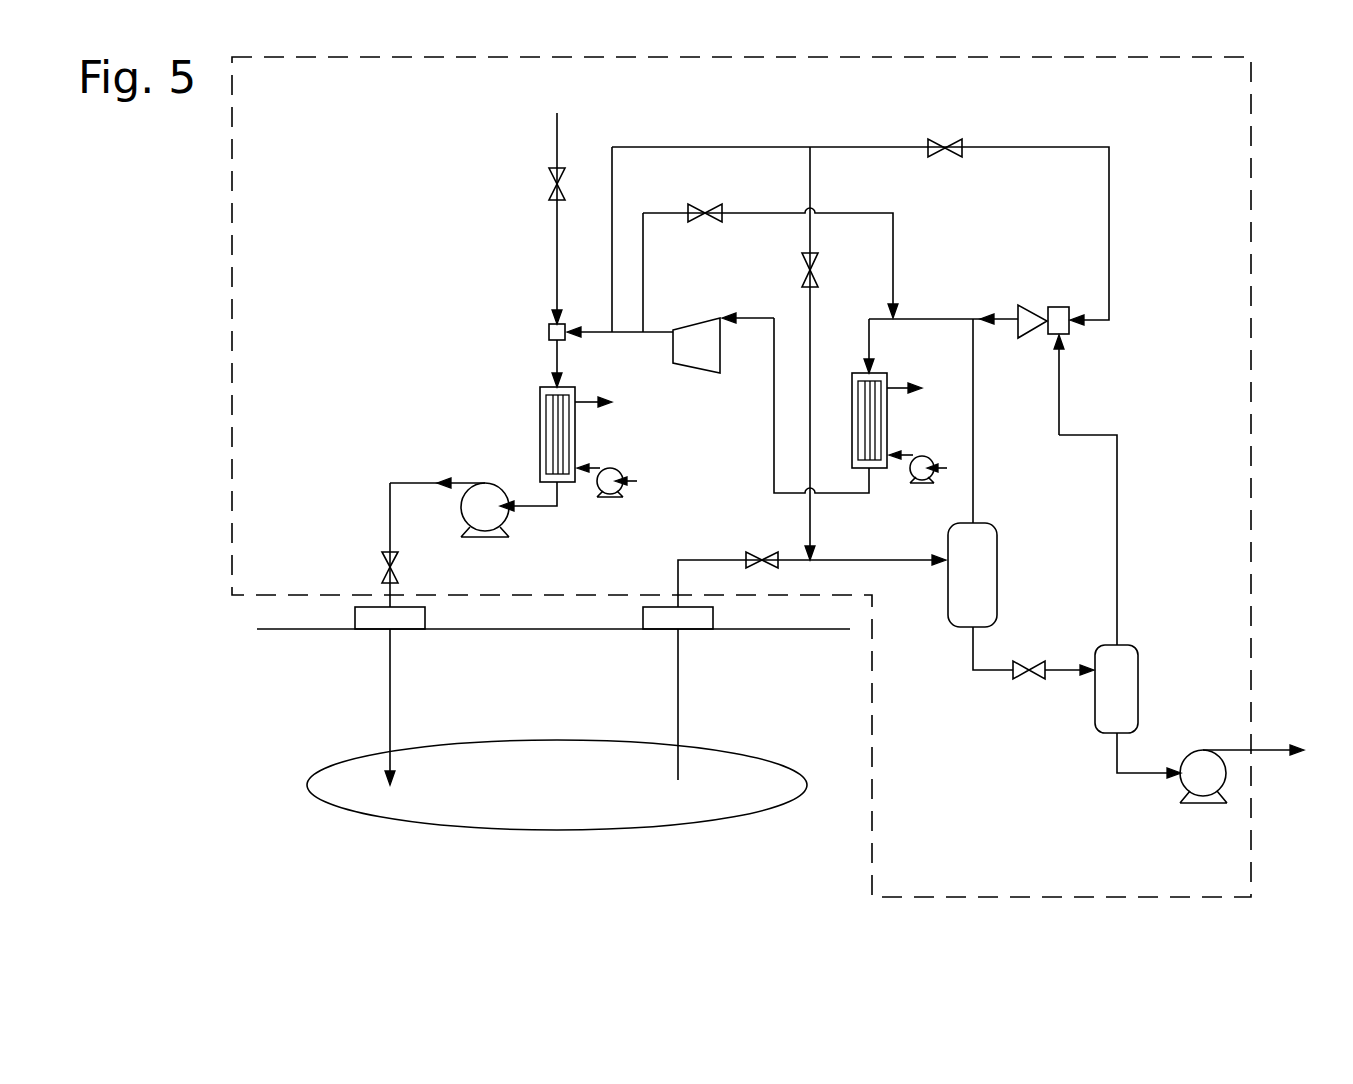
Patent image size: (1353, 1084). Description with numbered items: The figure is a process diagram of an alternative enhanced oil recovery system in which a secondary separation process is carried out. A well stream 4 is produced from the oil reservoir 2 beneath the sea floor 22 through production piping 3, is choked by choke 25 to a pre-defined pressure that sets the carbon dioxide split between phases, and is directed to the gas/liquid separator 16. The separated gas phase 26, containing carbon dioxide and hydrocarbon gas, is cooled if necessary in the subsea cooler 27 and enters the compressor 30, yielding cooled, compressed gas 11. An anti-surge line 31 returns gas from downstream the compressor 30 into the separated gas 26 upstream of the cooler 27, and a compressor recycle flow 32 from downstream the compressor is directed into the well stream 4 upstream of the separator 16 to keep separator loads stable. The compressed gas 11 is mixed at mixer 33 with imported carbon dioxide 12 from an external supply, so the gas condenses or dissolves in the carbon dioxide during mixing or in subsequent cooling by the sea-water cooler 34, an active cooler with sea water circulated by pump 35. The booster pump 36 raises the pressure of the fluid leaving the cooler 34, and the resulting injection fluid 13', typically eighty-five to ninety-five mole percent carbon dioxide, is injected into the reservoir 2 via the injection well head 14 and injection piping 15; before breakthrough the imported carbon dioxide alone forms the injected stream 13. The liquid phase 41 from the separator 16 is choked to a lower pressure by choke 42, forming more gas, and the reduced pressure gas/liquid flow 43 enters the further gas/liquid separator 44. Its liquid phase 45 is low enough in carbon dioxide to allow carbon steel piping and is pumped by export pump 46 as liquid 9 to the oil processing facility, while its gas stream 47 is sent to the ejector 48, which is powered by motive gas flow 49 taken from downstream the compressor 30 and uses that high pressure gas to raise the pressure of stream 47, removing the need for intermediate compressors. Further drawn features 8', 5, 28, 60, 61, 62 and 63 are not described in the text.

The fuel supply system 8' is at (692, 477).
The oil reservoir 2 is at (503, 829).
The production piping 3 is at (680, 696).
The well stream 4 is at (678, 571).
The deck penetration 5 is at (656, 623).
The liquid phase 9 is at (1268, 752).
The compressed gas 11 is at (597, 336).
The imported CO2 12 is at (557, 237).
The injection stream 13 is at (512, 362).
The injection fluid 13' is at (356, 545).
The injection well head 14 is at (408, 620).
The injection piping 15 is at (390, 712).
The gas/liquid separator 16 is at (990, 576).
The sea floor 22 is at (281, 632).
The choke 25 is at (762, 551).
The gas phase 26 is at (973, 362).
The subsea cooler 27 is at (878, 412).
The coolant pump 28 is at (917, 485).
The compressor 30 is at (698, 336).
The anti-surge line 31 is at (868, 212).
The compressor recycle flow 32 is at (808, 304).
The mixer 33 is at (548, 332).
The sea-water cooler 34 is at (543, 418).
The sea water pump 35 is at (617, 470).
The booster pump 36 is at (483, 528).
The liquid phase 41 is at (985, 672).
The choke 42 is at (1036, 681).
The reduced pressure gas/liquid flow 43 is at (1066, 668).
The further gas/liquid separator 44 is at (1130, 700).
The liquid phase 45 is at (1136, 775).
The export pump 46 is at (1206, 799).
The gas stream 47 is at (1117, 541).
The ejector 48 is at (1072, 336).
The motive gas flow 49 is at (1109, 233).
The reliquefaction arrangement 60 is at (722, 908).
The control valve 61 is at (946, 139).
The compressor 62 is at (1006, 318).
The compressed gas line 63 is at (939, 318).